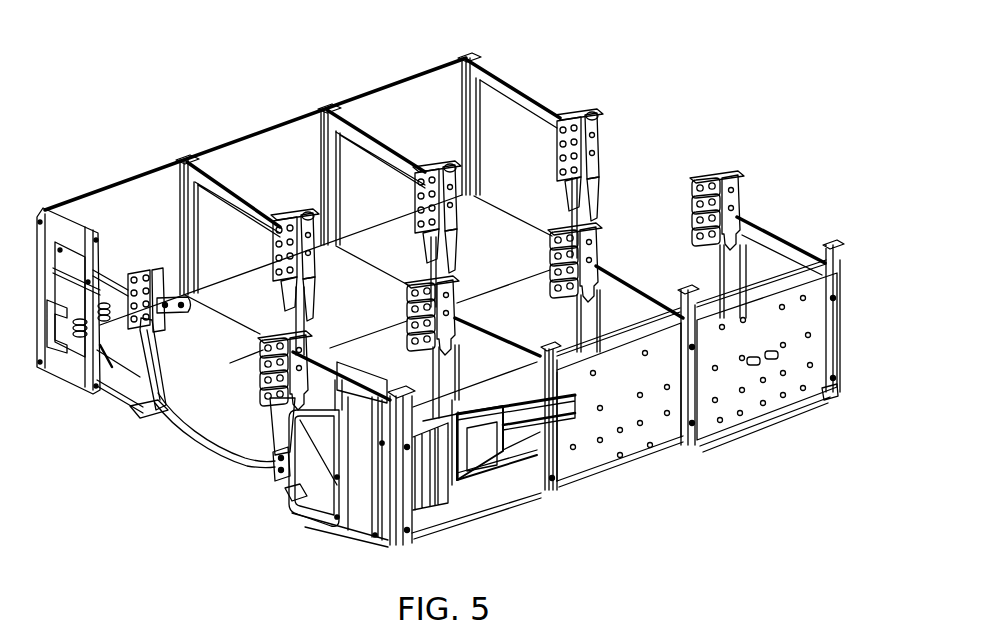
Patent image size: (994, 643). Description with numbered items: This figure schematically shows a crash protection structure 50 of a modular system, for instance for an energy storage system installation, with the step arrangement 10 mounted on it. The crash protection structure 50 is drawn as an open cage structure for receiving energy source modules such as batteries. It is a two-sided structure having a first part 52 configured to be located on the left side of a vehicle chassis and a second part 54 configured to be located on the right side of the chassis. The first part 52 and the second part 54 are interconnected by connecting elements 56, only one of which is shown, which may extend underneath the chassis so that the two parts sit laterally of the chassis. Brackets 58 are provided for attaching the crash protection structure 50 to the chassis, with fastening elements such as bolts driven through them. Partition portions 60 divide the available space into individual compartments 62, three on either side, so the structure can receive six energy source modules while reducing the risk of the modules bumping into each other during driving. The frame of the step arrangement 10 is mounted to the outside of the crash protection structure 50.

The step arrangement 10 is at (490, 478).
The crash protection structure 50 is at (143, 69).
The first part 52 is at (512, 81).
The second part 54 is at (779, 232).
The connecting element 56 is at (220, 453).
The bracket 58 is at (697, 195).
The partition portion 60 is at (356, 133).
The compartment 62 is at (438, 114).